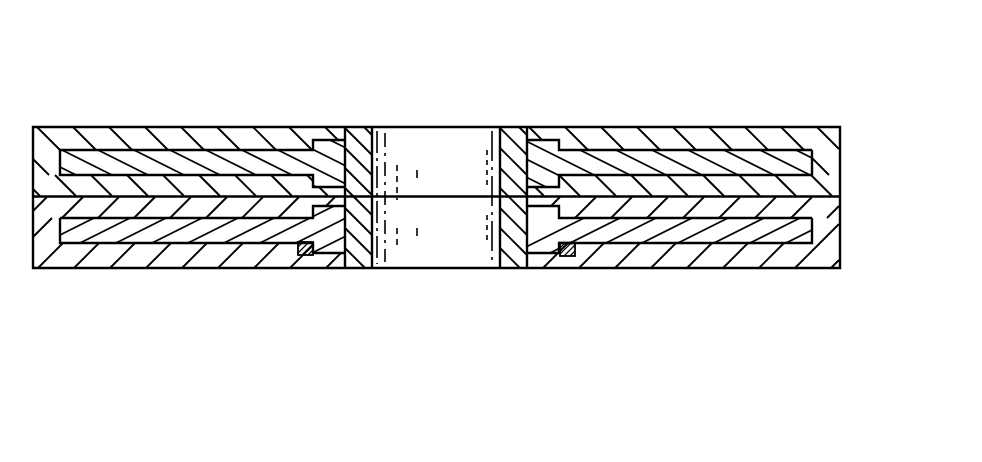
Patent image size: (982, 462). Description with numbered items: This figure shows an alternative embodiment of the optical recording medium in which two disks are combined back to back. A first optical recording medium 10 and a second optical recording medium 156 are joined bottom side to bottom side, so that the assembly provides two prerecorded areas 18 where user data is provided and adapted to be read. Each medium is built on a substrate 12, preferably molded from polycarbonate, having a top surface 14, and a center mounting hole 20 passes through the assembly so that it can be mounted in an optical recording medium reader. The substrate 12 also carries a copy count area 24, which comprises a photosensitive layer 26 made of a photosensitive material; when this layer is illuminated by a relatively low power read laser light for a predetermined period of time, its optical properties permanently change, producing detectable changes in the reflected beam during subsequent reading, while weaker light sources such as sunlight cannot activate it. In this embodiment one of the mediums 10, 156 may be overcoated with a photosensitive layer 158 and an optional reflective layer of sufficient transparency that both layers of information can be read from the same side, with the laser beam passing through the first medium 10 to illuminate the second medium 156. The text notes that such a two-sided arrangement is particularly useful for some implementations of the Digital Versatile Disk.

The optical recording medium 10 is at (155, 95).
The substrate 12 is at (842, 150).
The top surface 14 is at (270, 127).
The prerecorded area 18 is at (600, 148).
The center mounting hole 20 is at (412, 138).
The copy count area 24 is at (566, 262).
The photosensitive layer 26 is at (585, 252).
The second optical recording medium 156 is at (760, 282).
The photosensitive layer 158 is at (715, 127).